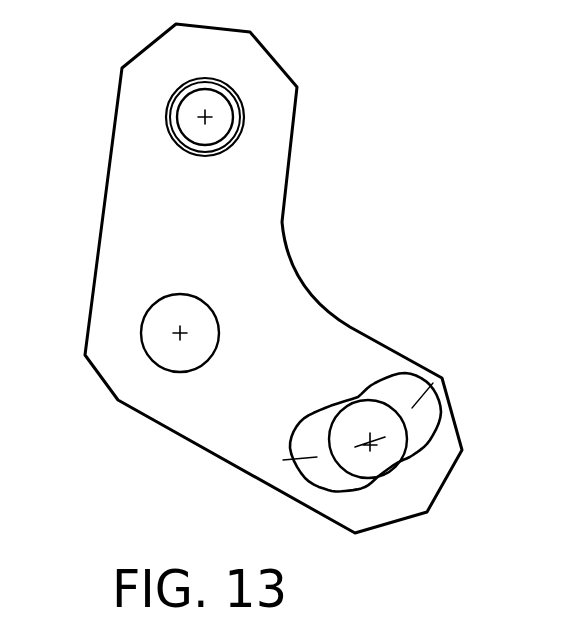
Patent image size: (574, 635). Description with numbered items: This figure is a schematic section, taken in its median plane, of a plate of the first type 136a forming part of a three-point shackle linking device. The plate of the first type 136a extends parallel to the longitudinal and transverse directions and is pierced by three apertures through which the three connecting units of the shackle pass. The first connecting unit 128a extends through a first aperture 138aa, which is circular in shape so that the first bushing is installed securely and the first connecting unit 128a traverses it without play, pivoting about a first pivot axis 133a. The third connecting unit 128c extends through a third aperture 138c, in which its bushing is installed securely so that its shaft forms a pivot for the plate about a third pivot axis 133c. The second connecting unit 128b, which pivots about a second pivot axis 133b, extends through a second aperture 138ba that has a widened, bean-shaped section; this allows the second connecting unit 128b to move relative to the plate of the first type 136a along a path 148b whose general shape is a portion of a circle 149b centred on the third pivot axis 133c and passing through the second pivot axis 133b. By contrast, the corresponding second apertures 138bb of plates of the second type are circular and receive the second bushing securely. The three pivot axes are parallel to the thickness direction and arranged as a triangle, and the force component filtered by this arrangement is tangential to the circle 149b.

The plate of the first type 136a is at (386, 334).
The first pivot axis 133a is at (180, 332).
The second pivot axis 133b is at (388, 471).
The third pivot axis 133c is at (204, 117).
The first connecting unit 128a is at (203, 309).
The second connecting unit 128b is at (334, 425).
The third connecting unit 128c is at (222, 137).
The first aperture 138aa is at (156, 352).
The second aperture of plate of the first type 138ba is at (310, 486).
The second aperture of plate of the second type 138bb is at (358, 483).
The third aperture 138c is at (232, 115).
The path 148b is at (422, 419).
The circle 149b is at (302, 470).